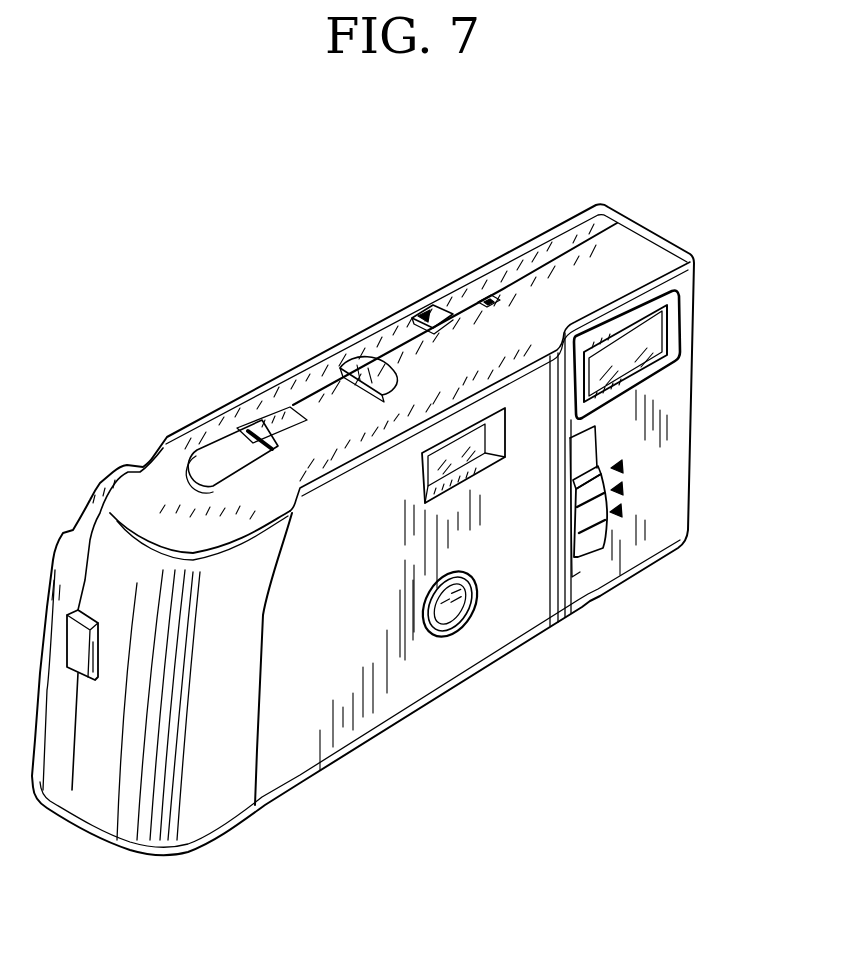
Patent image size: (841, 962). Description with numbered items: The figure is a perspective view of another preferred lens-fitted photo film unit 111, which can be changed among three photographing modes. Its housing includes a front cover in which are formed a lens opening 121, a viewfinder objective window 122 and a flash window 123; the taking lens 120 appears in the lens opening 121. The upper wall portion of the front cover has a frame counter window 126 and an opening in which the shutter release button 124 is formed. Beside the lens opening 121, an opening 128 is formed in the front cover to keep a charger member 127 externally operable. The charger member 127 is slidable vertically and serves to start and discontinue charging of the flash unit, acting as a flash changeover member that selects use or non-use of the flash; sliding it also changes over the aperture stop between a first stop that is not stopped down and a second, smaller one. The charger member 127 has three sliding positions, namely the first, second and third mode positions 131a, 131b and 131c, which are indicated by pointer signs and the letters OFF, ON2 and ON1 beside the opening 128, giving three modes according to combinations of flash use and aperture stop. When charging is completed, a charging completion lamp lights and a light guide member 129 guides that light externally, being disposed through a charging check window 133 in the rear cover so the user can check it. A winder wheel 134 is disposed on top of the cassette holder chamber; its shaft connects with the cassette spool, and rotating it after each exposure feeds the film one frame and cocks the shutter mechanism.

The lens-fitted photo film unit 111 is at (363, 168).
The taking lens 120 is at (443, 617).
The lens opening 121 is at (468, 616).
The viewfinder objective window 122 is at (423, 500).
The flash window 123 is at (668, 322).
The shutter release button 124 is at (213, 458).
The frame counter window 126 is at (360, 372).
The charger member 127 is at (593, 552).
The opening 128 is at (577, 448).
The light guide member 129 is at (418, 307).
The first mode position 131a is at (682, 499).
The second mode position 131b is at (683, 469).
The third mode position 131c is at (683, 434).
The charging check window 133 is at (443, 307).
The winder wheel 134 is at (100, 483).